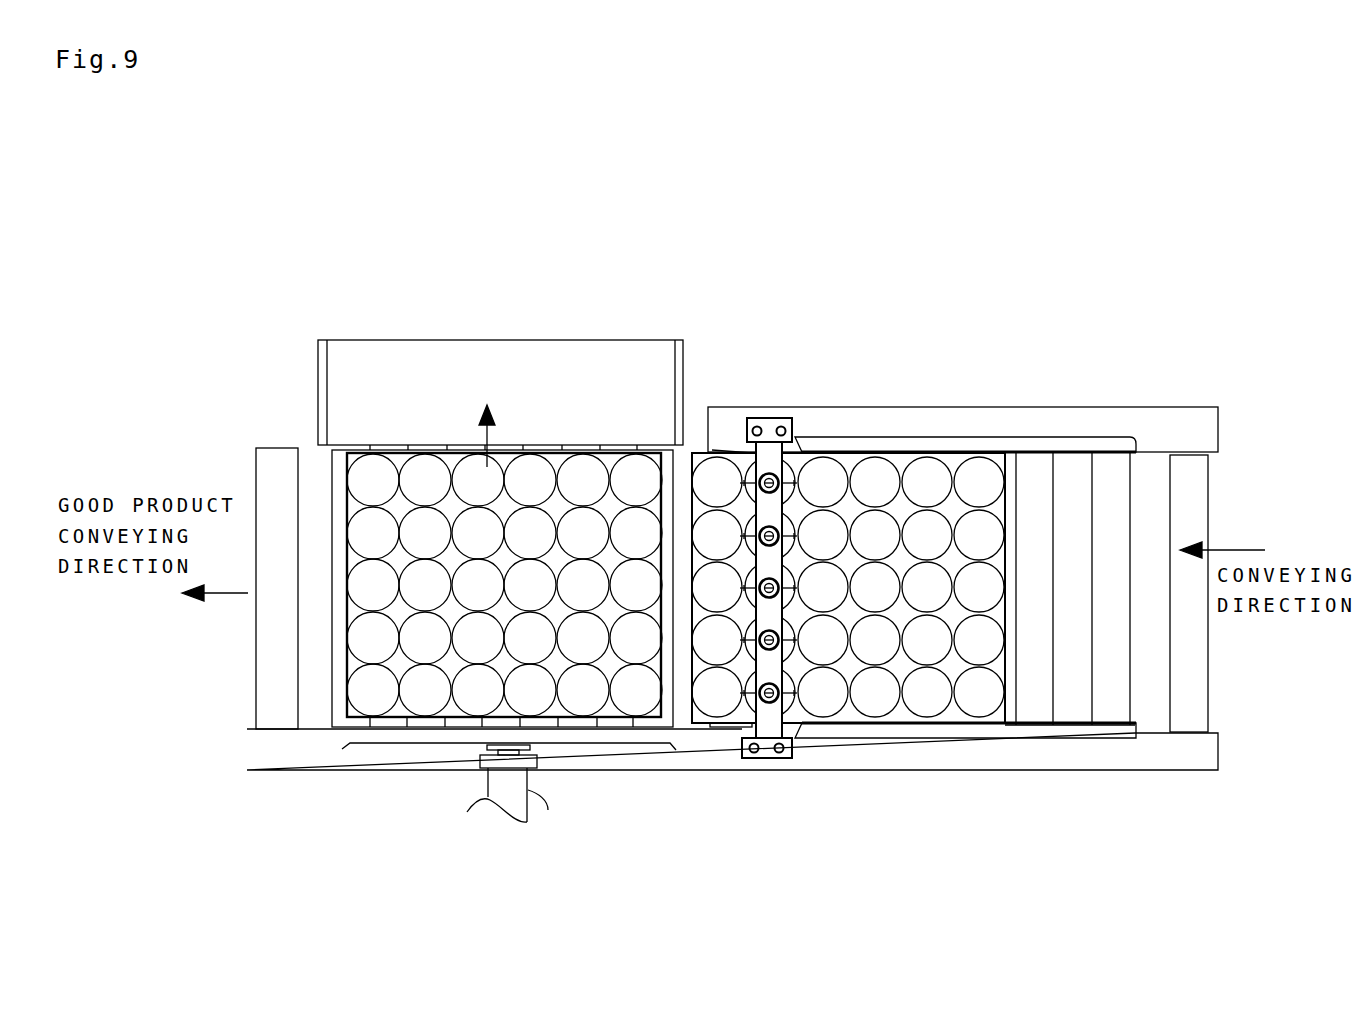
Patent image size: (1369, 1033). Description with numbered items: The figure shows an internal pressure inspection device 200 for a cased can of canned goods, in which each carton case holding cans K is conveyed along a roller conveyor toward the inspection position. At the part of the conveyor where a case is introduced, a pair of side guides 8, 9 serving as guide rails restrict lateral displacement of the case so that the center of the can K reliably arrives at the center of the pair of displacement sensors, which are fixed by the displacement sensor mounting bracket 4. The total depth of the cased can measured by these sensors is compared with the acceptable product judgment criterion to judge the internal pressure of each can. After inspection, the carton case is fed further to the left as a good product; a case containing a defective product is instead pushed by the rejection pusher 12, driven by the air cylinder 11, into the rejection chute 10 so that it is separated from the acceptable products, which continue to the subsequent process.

The internal pressure inspection device 200 is at (633, 273).
The rejection chute 10 is at (685, 387).
The side guide 8 is at (967, 447).
The side guide 9 is at (972, 732).
The can K is at (822, 483).
The displacement sensor mounting bracket 4 is at (768, 718).
The rejection pusher 12 is at (432, 745).
The air cylinder 11 is at (528, 790).